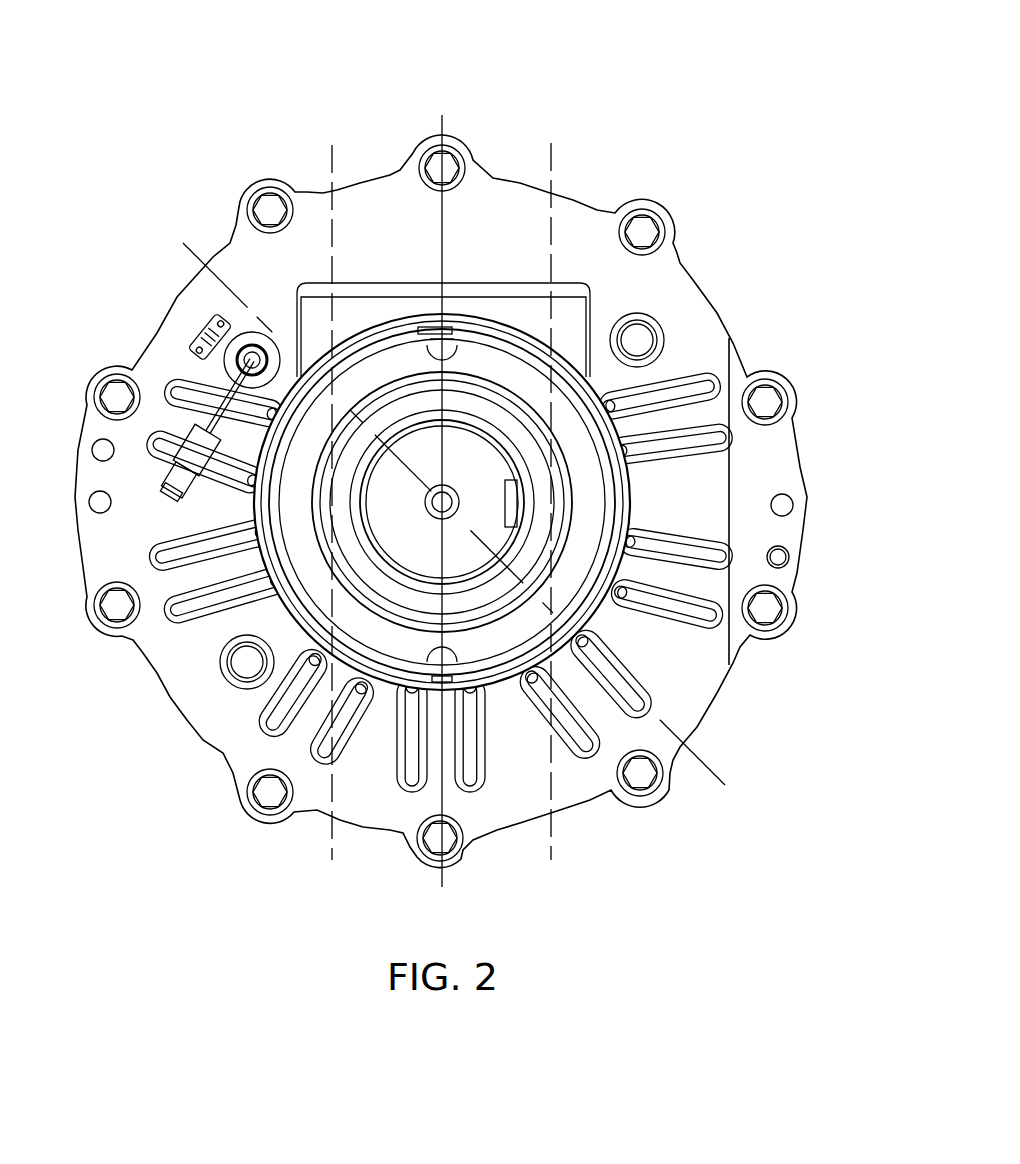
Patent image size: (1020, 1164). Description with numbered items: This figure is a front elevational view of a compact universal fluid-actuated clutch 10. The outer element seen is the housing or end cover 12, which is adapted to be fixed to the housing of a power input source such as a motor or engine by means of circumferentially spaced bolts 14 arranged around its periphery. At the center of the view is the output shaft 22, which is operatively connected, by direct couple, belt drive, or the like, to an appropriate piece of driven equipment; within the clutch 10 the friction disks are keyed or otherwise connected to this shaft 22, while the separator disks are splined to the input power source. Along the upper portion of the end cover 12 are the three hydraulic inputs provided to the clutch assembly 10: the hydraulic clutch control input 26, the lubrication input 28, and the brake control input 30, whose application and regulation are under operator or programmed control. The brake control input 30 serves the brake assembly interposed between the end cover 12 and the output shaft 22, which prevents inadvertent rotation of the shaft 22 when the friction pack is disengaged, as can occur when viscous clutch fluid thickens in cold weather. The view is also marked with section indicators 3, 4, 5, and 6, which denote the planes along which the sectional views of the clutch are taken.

The clutch 10 is at (621, 124).
The housing or end cover 12 is at (519, 211).
The bolts 14 is at (646, 232).
The output shaft 22 is at (484, 475).
The hydraulic clutch control input 26 is at (356, 280).
The lubrication input 28 is at (444, 280).
The brake control input 30 is at (554, 280).
The section line 3 is at (442, 118).
The section line 4 is at (332, 147).
The section line 5 is at (550, 147).
The section line 6 is at (183, 243).